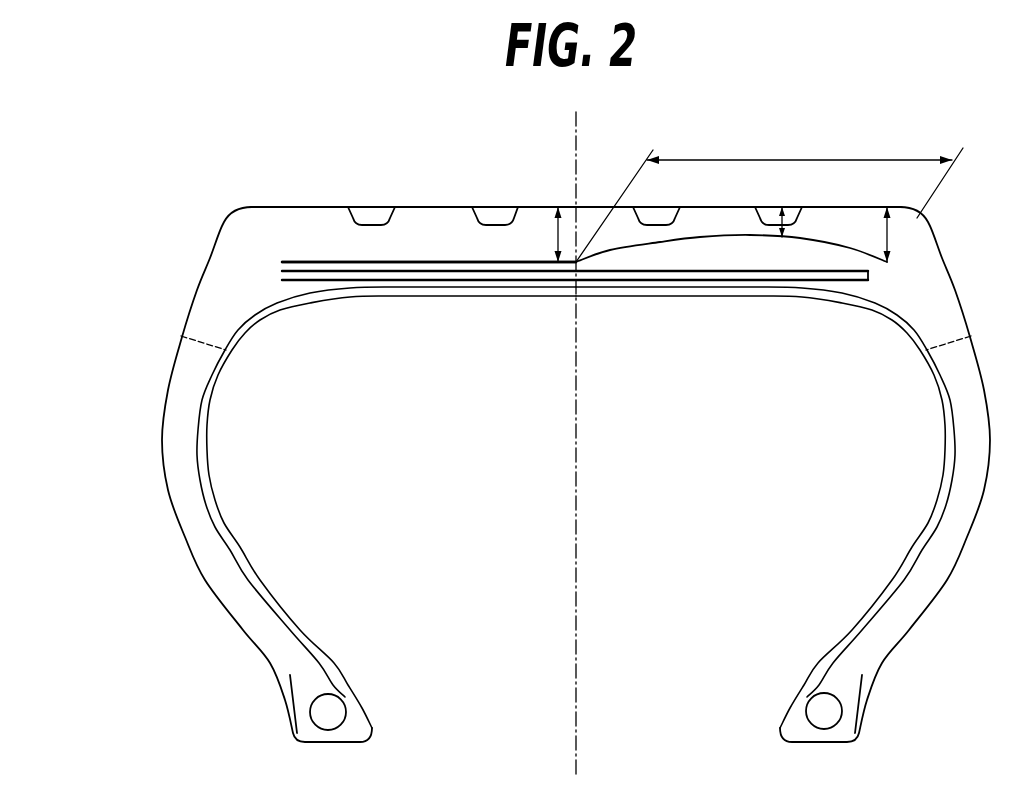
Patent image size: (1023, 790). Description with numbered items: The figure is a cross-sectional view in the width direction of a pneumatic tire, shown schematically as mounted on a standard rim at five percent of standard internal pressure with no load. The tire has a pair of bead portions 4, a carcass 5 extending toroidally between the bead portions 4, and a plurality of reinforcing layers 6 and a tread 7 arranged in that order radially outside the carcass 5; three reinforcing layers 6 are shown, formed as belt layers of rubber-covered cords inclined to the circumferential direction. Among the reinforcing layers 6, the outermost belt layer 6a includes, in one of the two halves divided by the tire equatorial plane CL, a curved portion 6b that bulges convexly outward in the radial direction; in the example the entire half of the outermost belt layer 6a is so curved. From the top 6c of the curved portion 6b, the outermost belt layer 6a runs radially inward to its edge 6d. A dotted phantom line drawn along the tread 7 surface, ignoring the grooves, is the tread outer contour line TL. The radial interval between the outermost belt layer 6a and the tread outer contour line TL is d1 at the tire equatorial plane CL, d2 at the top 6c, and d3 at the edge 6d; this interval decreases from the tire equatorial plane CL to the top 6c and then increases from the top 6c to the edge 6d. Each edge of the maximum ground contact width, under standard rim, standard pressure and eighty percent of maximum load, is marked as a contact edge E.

The bead portion 4 is at (323, 712).
The carcass 5 is at (927, 523).
The reinforcing layer 6 is at (278, 258).
The outermost belt layer 6a is at (313, 262).
The curved portion 6b is at (769, 196).
The top of curved portion 6c is at (780, 237).
The edge of outermost reinforcing layer 6d is at (887, 262).
The tread 7 is at (432, 222).
The interval at tire equatorial plane d1 is at (547, 234).
The interval at top of curved portion d2 is at (782, 212).
The interval at outermost belt edge d3 is at (873, 234).
The contact edge E is at (318, 207).
The tread outer contour line TL is at (497, 207).
The tire equatorial plane CL is at (579, 430).